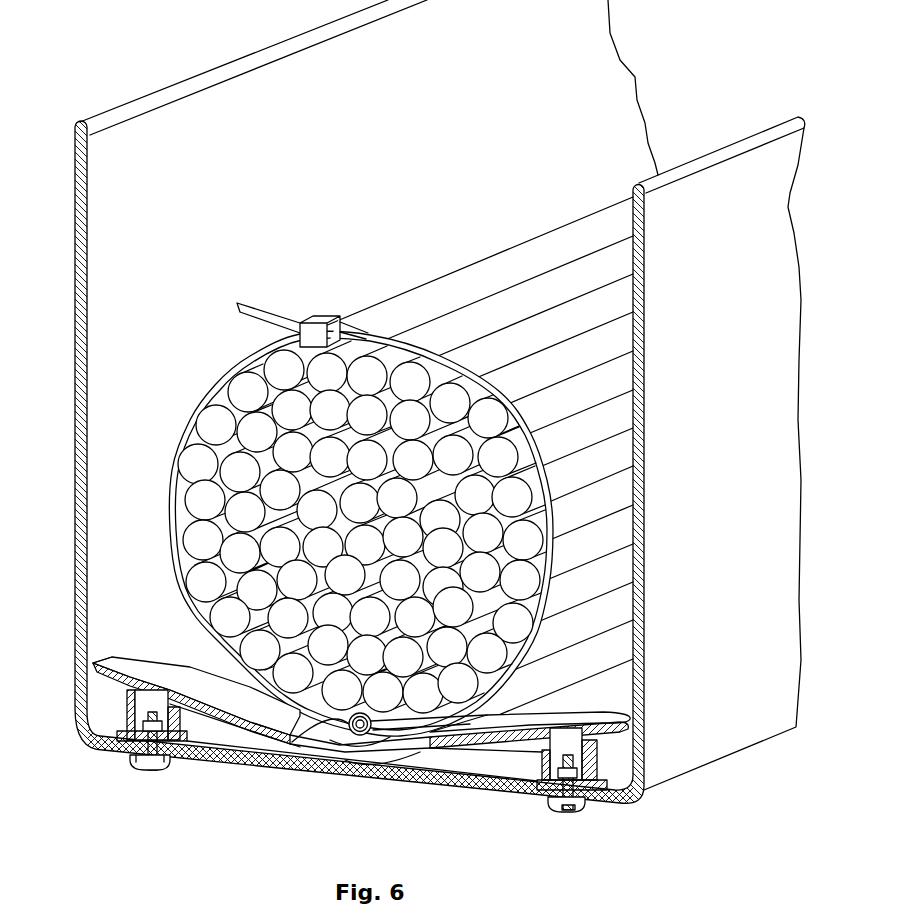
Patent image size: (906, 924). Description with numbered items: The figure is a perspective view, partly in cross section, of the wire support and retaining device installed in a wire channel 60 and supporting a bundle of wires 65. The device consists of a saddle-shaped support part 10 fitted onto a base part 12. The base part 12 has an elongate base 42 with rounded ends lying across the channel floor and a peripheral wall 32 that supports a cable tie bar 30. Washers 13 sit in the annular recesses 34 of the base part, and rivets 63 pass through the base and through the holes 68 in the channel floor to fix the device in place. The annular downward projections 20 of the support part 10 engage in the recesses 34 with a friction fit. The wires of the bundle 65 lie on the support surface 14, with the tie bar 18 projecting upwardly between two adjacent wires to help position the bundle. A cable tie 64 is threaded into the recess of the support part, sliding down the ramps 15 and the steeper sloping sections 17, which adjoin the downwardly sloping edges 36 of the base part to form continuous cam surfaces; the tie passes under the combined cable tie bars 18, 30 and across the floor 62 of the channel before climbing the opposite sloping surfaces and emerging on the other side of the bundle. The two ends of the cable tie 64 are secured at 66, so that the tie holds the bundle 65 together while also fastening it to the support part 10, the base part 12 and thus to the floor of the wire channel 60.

The support part 10 is at (359, 730).
The base part 12 is at (127, 710).
The washers 13 is at (590, 777).
The support surface 14 is at (578, 712).
The ramps 15 is at (190, 685).
The steeply sloping sections 17 is at (375, 757).
The tie bar 18 is at (425, 745).
The annular downward projections 20 is at (120, 672).
The cable tie bar 30 is at (330, 757).
The peripheral wall 32 is at (505, 765).
The annular recesses 34 is at (150, 700).
The downwardly sloping edges 36 is at (355, 748).
The base 42 is at (245, 737).
The wire channel 60 is at (107, 228).
The floor of the channel 62 is at (366, 735).
The rivets 63 is at (155, 770).
The cable tie 64 is at (177, 405).
The bundle of wires 65 is at (570, 248).
The cable tie securing point 66 is at (330, 318).
The holes in the floor of the channel 68 is at (135, 762).